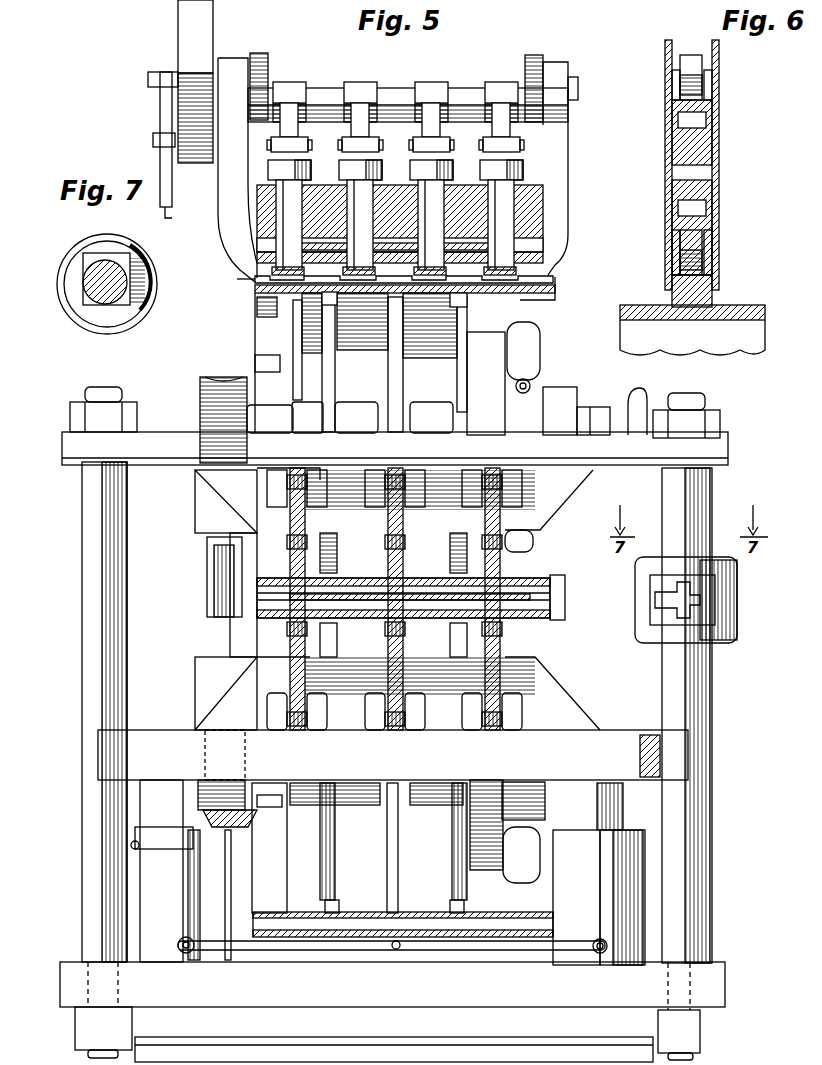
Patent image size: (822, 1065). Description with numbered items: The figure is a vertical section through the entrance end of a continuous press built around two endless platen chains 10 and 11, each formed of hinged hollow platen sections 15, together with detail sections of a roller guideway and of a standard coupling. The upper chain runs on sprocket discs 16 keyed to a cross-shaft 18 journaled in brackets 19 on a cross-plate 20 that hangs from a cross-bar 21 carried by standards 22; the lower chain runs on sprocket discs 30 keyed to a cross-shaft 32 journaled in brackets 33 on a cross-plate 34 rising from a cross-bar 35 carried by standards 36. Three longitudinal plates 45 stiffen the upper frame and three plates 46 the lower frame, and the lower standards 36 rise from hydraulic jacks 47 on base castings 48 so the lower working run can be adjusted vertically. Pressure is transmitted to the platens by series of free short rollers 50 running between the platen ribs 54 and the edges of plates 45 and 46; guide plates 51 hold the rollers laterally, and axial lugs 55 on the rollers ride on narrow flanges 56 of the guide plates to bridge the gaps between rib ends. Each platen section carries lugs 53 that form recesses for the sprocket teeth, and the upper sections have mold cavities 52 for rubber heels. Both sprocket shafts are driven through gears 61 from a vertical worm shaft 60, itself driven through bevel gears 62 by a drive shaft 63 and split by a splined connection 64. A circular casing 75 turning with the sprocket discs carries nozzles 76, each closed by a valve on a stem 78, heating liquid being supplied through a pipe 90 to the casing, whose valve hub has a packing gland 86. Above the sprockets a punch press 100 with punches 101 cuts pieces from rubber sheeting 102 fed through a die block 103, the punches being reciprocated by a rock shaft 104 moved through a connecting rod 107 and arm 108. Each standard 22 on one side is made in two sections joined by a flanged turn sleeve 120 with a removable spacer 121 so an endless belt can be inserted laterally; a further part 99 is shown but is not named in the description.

In FIG. 5, the endless chain 10 is at (245, 304).
In FIG. 5, the endless chain 11 is at (305, 935).
In FIG. 5, the platen section 15 is at (545, 276).
In FIG. 5, the sprocket discs 16 is at (328, 334).
In FIG. 5, the cross-shaft 18 is at (378, 422).
In FIG. 5, the brackets 19 is at (350, 417).
In FIG. 5, the cross-plate 20 is at (550, 508).
In FIG. 5, the cross-bar 21 is at (622, 470).
In FIG. 5, the standards 22 is at (82, 485).
In FIG. 5, the sprocket discs 30 is at (336, 866).
In FIG. 5, the cross-shaft 32 is at (407, 848).
In FIG. 5, the brackets 33 is at (340, 812).
In FIG. 5, the cross-plate 34 is at (537, 678).
In FIG. 5, the cross-bar 35 is at (628, 730).
In FIG. 5, the standards 36 is at (168, 800).
In FIG. 5, the longitudinal plates 45 is at (302, 515).
In FIG. 6, the longitudinal plates 45 is at (712, 180).
In FIG. 5, the longitudinal plates 46 is at (400, 652).
In FIG. 5, the hydraulic jacks 47 is at (394, 897).
In FIG. 5, the base castings 48 is at (392, 1012).
In FIG. 5, the rollers 50 is at (397, 468).
In FIG. 6, the rollers 50 is at (700, 62).
In FIG. 5, the guide plates 51 is at (405, 477).
In FIG. 6, the guide plates 51 is at (666, 92).
In FIG. 5, the mold cavities 52 is at (262, 282).
In FIG. 5, the lugs 53 is at (462, 300).
In FIG. 5, the ribs 54 is at (292, 308).
In FIG. 6, the axial lug 55 is at (712, 86).
In FIG. 6, the flanges 56 is at (665, 65).
In FIG. 5, the worm shaft 60 is at (215, 628).
In FIG. 5, the gears 61 is at (210, 382).
In FIG. 5, the bevel gears 62 is at (248, 817).
In FIG. 5, the drive shaft 63 is at (135, 847).
In FIG. 5, the splined connection 64 is at (207, 582).
In FIG. 5, the circular casing 75 is at (504, 375).
In FIG. 5, the nozzles 76 is at (528, 336).
In FIG. 5, the stem 78 is at (530, 384).
In FIG. 5, the packing gland 86 is at (596, 410).
In FIG. 5, the pipe 90 is at (642, 398).
In FIG. 5, the block 99 is at (550, 408).
In FIG. 5, the punch press 100 is at (548, 200).
In FIG. 5, the punches 101 is at (280, 193).
In FIG. 5, the rubber sheeting 102 is at (490, 252).
In FIG. 5, the die block 103 is at (472, 243).
In FIG. 5, the rock shaft 104 is at (398, 92).
In FIG. 5, the connecting rod 107 is at (185, 216).
In FIG. 5, the arm 108 is at (160, 116).
In FIG. 5, the flanged turn sleeve 120 is at (737, 600).
In FIG. 7, the flanged turn sleeve 120 is at (75, 318).
In FIG. 5, the removable spacer 121 is at (655, 600).